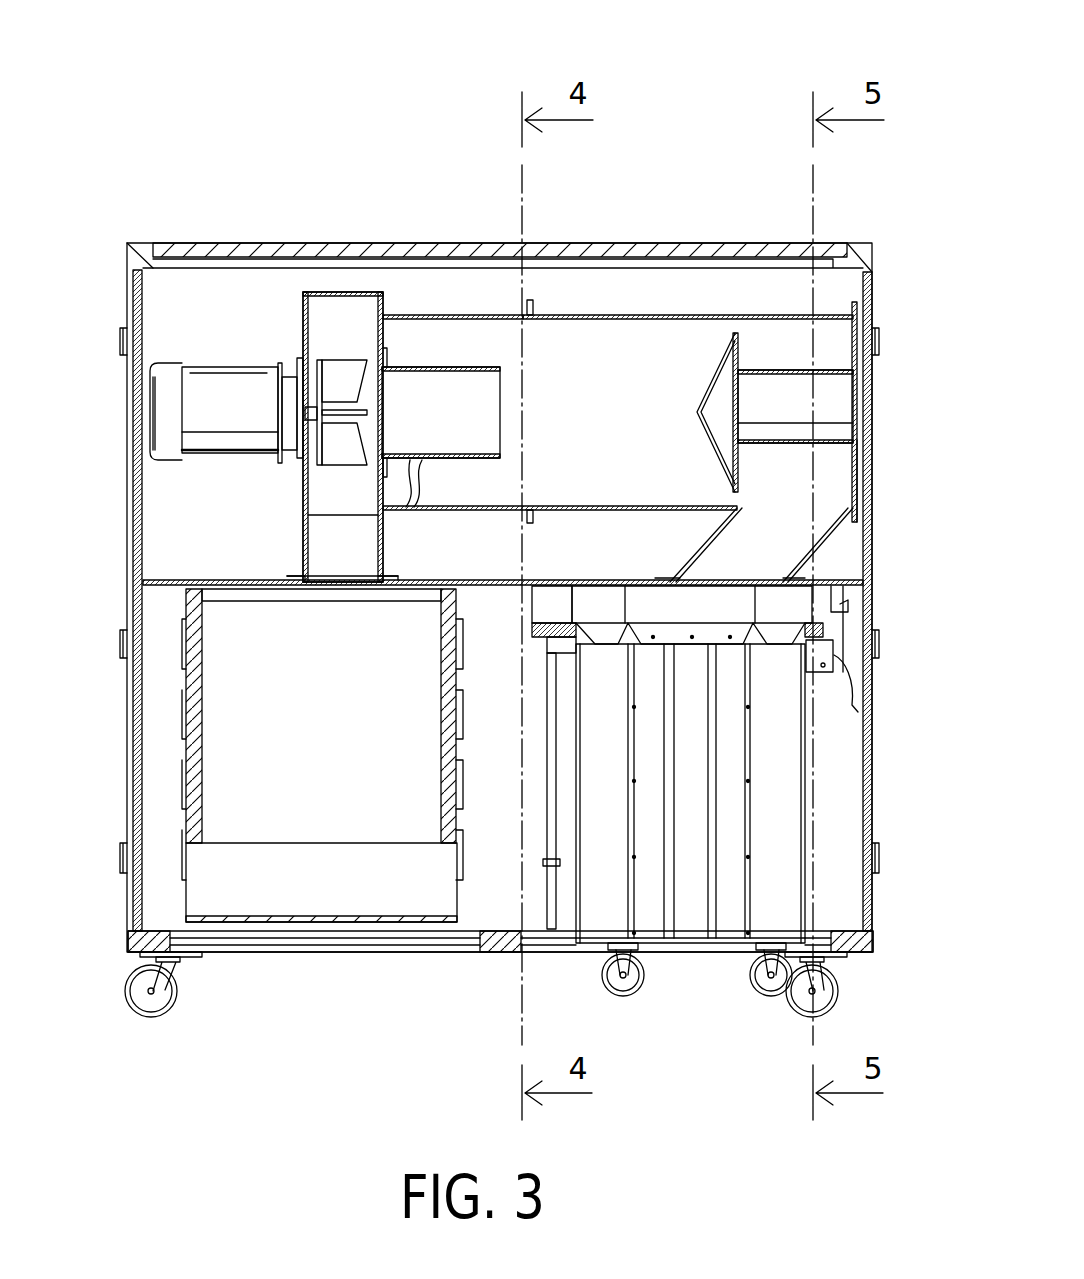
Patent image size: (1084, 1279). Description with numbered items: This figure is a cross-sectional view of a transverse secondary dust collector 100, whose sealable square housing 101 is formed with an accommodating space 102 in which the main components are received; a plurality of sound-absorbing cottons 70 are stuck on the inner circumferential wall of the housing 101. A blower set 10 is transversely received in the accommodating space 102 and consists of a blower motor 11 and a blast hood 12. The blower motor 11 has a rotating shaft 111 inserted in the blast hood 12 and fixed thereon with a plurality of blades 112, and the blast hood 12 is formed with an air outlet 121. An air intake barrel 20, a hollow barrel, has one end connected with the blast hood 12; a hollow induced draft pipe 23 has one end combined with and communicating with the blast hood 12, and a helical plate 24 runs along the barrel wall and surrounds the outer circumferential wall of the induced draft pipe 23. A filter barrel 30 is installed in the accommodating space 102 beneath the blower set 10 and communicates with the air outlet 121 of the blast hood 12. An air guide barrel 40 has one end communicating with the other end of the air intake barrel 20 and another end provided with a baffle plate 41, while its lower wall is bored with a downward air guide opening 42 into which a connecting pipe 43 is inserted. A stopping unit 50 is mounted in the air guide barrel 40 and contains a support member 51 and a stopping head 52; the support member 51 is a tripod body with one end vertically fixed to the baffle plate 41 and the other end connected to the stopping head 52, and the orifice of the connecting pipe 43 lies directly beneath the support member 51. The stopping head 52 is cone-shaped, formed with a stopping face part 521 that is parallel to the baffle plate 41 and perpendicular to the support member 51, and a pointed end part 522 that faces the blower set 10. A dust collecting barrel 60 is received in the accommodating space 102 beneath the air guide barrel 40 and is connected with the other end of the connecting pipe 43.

The transverse secondary dust collector 100 is at (190, 150).
The sealable square housing 101 is at (217, 243).
The accommodating space 102 is at (730, 283).
The sound-absorbing cottons 70 is at (150, 299).
The blower set 10 is at (240, 355).
The blower motor 11 is at (157, 393).
The rotating shaft 111 is at (305, 413).
The blades 112 is at (353, 370).
The blast hood 12 is at (313, 290).
The air outlet 121 is at (340, 580).
The air intake barrel 20 is at (415, 300).
The induced draft pipe 23 is at (488, 362).
The helical plate 24 is at (458, 365).
The air guide barrel 40 is at (575, 300).
The baffle plate 41 is at (857, 455).
The air guide opening 42 is at (800, 512).
The connecting pipe 43 is at (815, 545).
The stopping unit 50 is at (840, 360).
The support member 51 is at (820, 367).
The stopping head 52 is at (733, 340).
The stopping face part 521 is at (740, 352).
The pointed end part 522 is at (712, 350).
The filter barrel 30 is at (170, 745).
The dust collecting barrel 60 is at (840, 775).